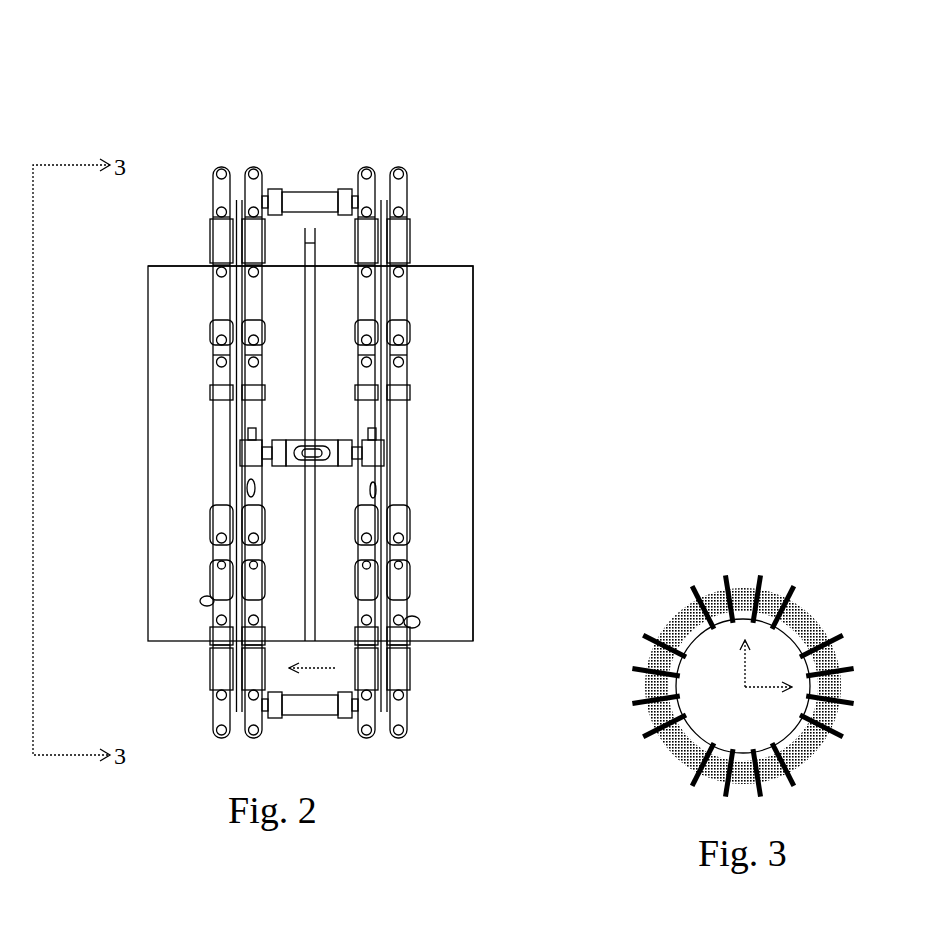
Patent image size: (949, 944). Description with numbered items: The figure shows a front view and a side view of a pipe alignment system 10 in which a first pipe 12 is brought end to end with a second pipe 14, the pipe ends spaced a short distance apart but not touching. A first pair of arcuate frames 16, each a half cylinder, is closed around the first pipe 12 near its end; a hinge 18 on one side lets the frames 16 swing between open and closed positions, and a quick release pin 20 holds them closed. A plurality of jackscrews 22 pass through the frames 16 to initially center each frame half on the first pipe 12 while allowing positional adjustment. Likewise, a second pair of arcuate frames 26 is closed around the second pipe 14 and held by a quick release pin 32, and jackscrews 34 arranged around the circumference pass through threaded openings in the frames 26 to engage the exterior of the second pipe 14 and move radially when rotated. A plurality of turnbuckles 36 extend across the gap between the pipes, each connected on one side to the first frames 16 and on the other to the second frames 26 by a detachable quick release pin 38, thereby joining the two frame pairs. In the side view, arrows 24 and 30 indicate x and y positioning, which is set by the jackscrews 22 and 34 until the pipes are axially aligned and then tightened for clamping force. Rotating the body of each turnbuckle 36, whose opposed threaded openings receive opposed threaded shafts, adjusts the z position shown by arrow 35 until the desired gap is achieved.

In FIG. 2, the pipe alignment system 10 is at (466, 165).
In FIG. 3, the pipe alignment system 10 is at (733, 552).
In FIG. 2, the first pipe 12 is at (173, 623).
In FIG. 2, the second pipe 14 is at (448, 280).
In FIG. 2, the first pair of arcuate frames 16 is at (238, 412).
In FIG. 3, the hinge 18 is at (647, 686).
In FIG. 2, the quick release pin 20 is at (200, 601).
In FIG. 2, the jackscrews 22 is at (221, 165).
In FIG. 3, the arrow 24 is at (763, 688).
In FIG. 2, the second pair of arcuate frames 26 is at (390, 411).
In FIG. 3, the arrow 30 is at (745, 667).
In FIG. 2, the quick release pin 32 is at (425, 620).
In FIG. 2, the jackscrews 34 is at (367, 170).
In FIG. 2, the arrow 35 is at (307, 670).
In FIG. 2, the turnbuckles 36 is at (303, 188).
In FIG. 2, the quick release pin 38 is at (238, 485).